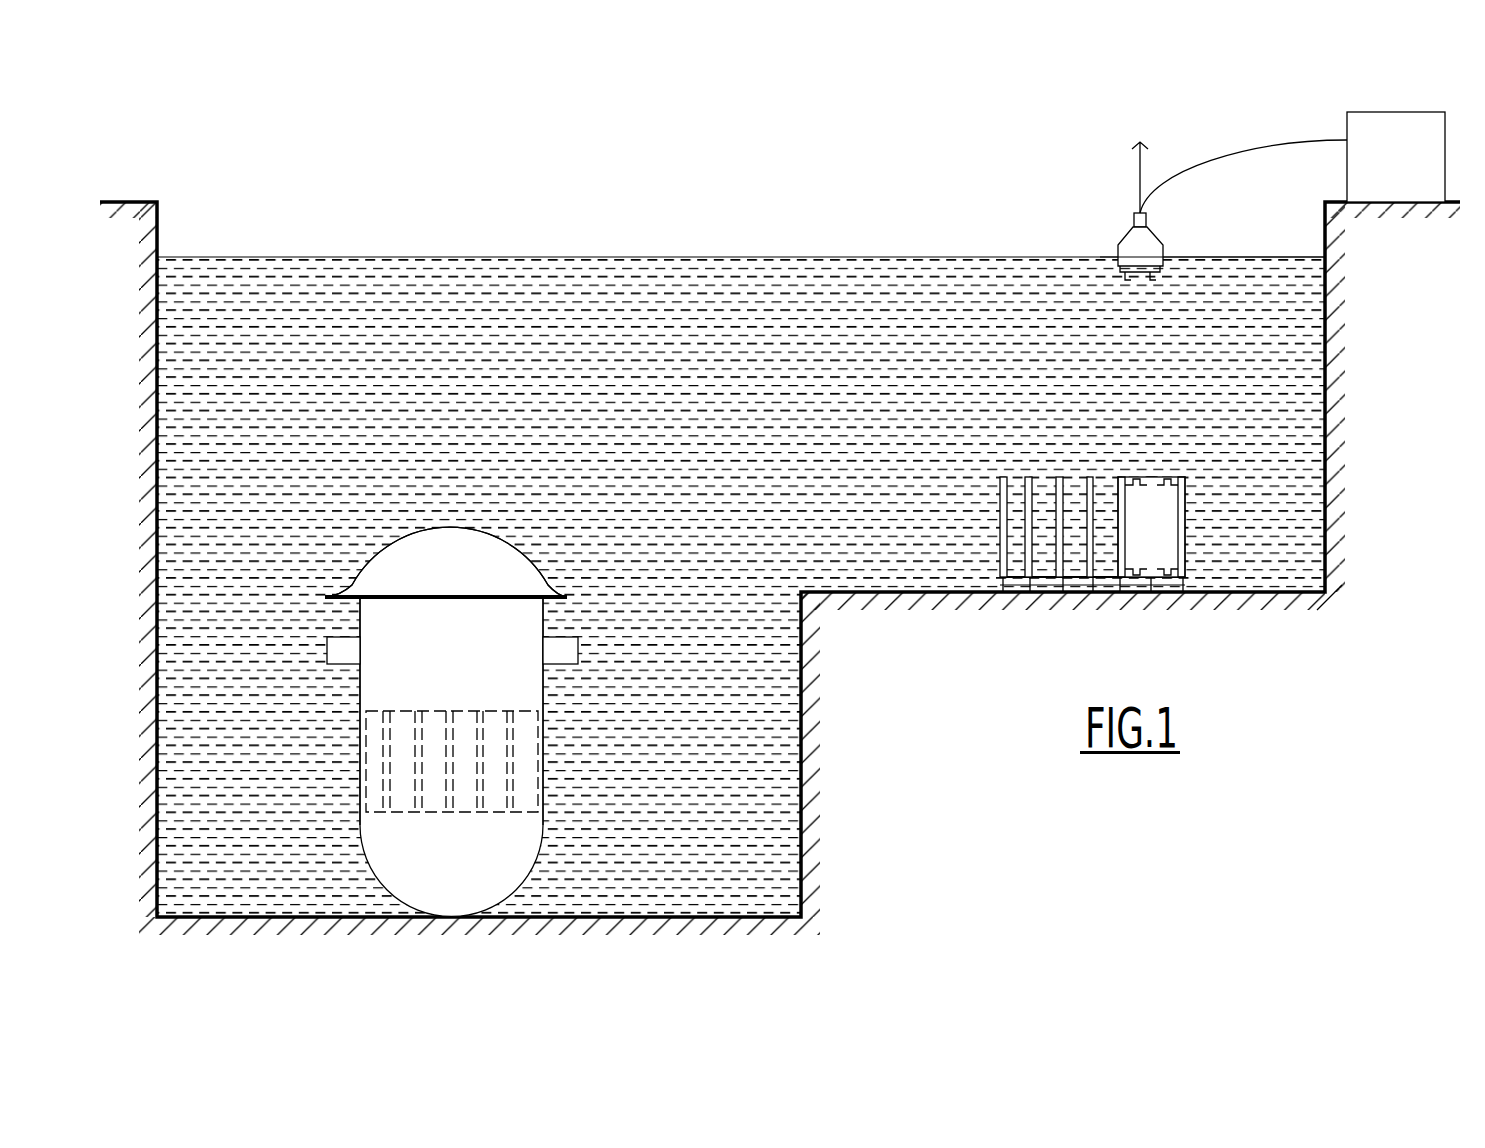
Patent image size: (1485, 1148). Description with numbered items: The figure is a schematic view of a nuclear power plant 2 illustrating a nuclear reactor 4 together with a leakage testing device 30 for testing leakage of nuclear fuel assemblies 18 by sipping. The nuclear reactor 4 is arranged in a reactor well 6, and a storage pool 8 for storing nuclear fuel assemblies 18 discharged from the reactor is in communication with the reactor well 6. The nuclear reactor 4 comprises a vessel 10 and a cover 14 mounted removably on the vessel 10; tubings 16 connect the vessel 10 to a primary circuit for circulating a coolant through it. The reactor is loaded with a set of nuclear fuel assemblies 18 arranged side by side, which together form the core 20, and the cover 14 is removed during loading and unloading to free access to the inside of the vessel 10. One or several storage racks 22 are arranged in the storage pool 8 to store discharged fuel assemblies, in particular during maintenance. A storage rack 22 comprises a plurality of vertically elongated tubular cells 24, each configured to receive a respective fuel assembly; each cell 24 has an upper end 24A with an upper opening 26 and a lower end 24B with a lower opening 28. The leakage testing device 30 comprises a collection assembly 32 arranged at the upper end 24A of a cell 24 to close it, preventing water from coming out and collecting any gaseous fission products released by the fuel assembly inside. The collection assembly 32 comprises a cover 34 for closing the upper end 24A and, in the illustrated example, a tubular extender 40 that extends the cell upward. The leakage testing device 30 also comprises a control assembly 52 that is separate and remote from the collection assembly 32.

The nuclear power plant 2 is at (258, 160).
The nuclear reactor 4 is at (300, 563).
The reactor well 6 is at (175, 658).
The storage pool 8 is at (1328, 362).
The vessel 10 is at (752, 559).
The cover 14 is at (416, 573).
The tubings 16 is at (330, 665).
The nuclear fuel assemblies 18 is at (458, 800).
The core 20 is at (457, 823).
The storage rack 22 is at (957, 512).
The cell 24 is at (988, 441).
The upper end 24A is at (1077, 473).
The lower end 24B is at (1040, 577).
The upper opening 26 is at (1078, 483).
The lower opening 28 is at (1075, 577).
The leakage testing device 30 is at (1060, 150).
The collection assembly 32 is at (1095, 263).
The cover 34 is at (1147, 235).
The tubular extender 40 is at (1141, 272).
The control assembly 52 is at (1357, 168).